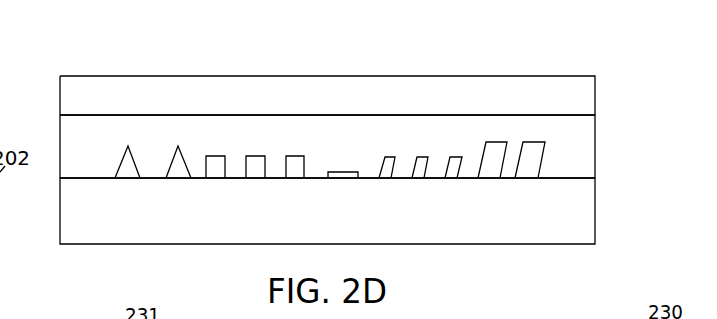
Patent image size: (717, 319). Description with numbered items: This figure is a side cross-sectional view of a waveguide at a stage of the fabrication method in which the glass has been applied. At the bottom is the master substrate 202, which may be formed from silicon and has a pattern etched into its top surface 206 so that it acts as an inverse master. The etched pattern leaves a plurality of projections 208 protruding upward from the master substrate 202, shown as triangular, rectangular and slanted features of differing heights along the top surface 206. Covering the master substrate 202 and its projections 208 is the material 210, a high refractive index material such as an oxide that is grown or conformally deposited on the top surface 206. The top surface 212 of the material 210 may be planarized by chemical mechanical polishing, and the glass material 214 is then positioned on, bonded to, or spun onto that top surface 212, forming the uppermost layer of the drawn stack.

The master substrate 202 is at (595, 205).
The top surface 206 is at (563, 178).
The projections 208 is at (115, 178).
The material 210 is at (595, 139).
The top surface 212 is at (549, 115).
The glass material 214 is at (504, 76).